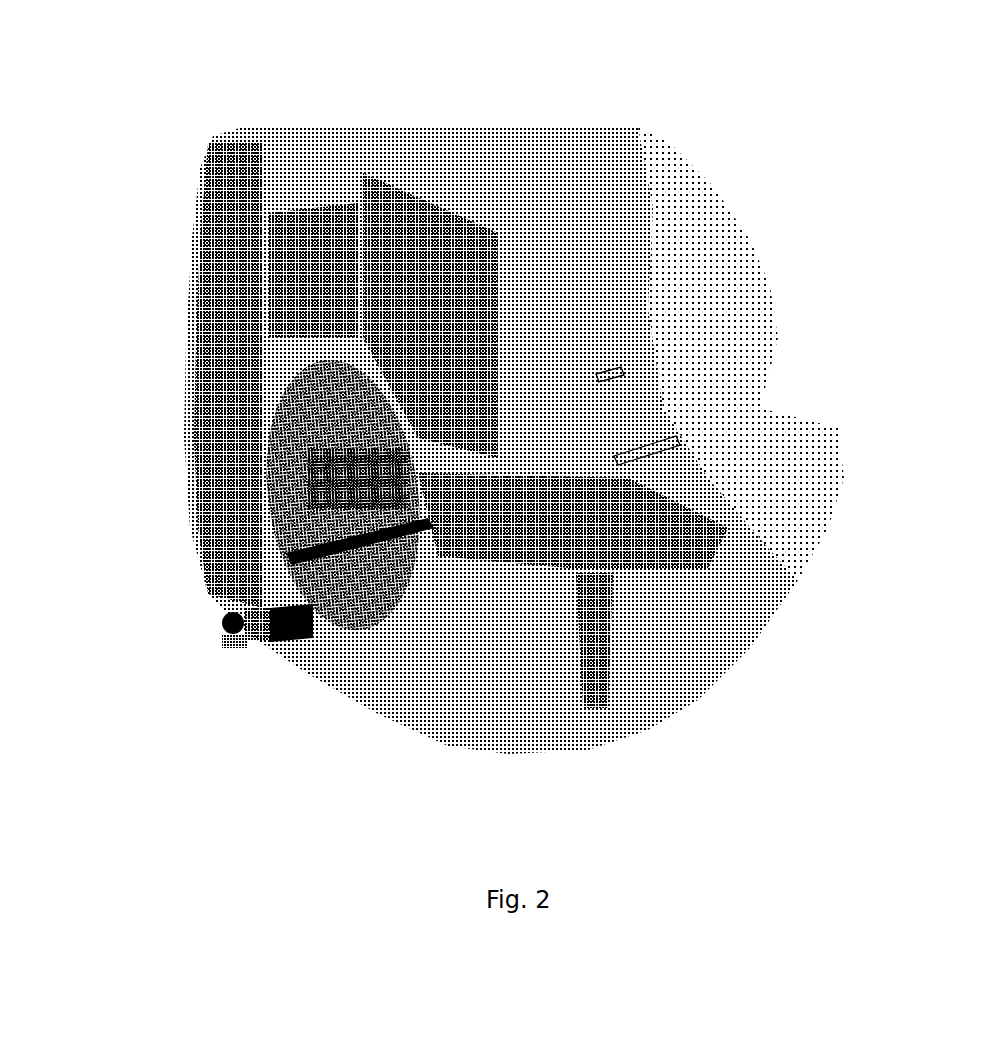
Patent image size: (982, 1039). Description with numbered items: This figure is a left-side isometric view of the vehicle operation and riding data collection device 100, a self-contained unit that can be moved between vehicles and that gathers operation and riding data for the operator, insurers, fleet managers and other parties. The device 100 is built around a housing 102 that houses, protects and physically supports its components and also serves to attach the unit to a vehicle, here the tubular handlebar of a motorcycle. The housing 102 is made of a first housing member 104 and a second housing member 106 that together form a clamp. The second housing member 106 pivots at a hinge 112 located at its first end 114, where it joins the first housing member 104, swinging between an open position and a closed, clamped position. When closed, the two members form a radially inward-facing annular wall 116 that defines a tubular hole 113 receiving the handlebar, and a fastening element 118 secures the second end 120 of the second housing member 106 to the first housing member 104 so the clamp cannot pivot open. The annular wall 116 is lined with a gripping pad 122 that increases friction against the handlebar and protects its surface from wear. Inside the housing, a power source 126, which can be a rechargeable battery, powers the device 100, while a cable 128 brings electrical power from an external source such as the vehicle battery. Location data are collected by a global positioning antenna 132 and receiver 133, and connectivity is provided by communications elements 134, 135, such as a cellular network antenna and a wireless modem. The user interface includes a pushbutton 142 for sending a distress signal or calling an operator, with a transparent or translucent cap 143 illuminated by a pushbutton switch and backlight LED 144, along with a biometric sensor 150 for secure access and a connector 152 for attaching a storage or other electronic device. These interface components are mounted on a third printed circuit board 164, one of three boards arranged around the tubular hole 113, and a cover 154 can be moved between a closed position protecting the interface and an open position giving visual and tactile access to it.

The vehicle operation and riding data collection device 100 is at (116, 126).
The housing 102 is at (246, 615).
The first housing member 104 is at (282, 558).
The second housing member 106 is at (575, 713).
The hinge 112 is at (260, 625).
The tubular hole 113 is at (352, 480).
The first end 114 is at (230, 642).
The radially inward-facing annular wall 116 is at (290, 380).
The fastening element 118 is at (680, 565).
The second end 120 is at (800, 540).
The gripping pad 122 is at (403, 597).
The power source 126 is at (218, 298).
The cable 128 is at (186, 628).
The global positioning antenna 132 is at (410, 150).
The receiver 133 is at (484, 145).
The communications element 134 is at (292, 130).
The communications element 135 is at (268, 188).
The pushbutton 142 is at (658, 270).
The cap 143 is at (704, 167).
The pushbutton switch and backlight LED 144 is at (690, 300).
The biometric sensor 150 is at (618, 368).
The connector 152 is at (672, 434).
The cover 154 is at (737, 290).
The third printed circuit board 164 is at (545, 200).